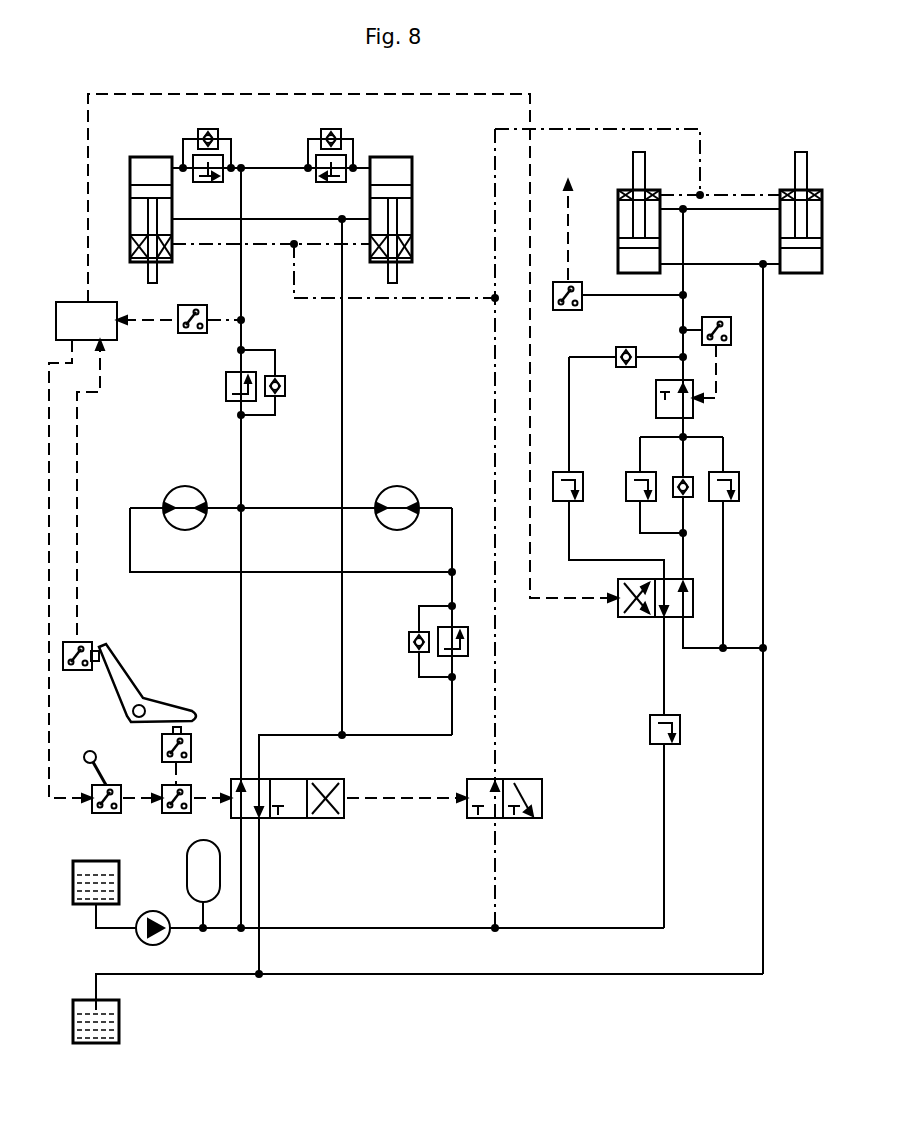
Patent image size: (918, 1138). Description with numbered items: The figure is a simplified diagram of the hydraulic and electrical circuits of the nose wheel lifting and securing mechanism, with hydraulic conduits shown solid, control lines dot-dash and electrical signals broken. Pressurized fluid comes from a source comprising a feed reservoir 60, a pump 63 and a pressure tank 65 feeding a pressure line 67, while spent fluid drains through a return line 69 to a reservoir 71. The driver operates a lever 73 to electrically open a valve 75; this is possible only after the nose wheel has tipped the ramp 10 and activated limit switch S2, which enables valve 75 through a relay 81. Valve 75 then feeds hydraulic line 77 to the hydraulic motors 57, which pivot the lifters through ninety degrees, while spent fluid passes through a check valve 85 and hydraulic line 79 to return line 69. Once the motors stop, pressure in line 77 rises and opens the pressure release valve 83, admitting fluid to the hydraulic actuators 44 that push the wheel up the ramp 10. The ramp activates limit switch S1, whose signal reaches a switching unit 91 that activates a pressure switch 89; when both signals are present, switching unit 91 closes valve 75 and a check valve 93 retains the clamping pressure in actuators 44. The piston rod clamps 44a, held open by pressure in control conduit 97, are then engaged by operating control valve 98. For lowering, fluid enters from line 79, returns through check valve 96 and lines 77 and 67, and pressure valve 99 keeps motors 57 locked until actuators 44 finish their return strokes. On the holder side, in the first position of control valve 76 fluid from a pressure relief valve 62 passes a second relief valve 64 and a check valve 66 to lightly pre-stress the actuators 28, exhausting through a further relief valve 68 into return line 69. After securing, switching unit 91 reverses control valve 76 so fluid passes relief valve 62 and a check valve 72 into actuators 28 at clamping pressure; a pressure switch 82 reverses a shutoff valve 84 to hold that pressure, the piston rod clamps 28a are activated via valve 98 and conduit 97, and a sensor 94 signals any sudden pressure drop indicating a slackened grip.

The ramp 10 is at (164, 712).
The hydraulic actuator 28 is at (620, 262).
The piston rod clamp 28a is at (628, 188).
The hydraulic actuator 44 is at (130, 165).
The piston rod clamp 44a is at (133, 246).
The hydraulic motor 57 is at (190, 468).
The tank 60 is at (73, 877).
The pressure relief valve 62 is at (680, 727).
The pump 63 is at (165, 938).
The second relief valve 64 is at (564, 472).
The pressure tank 65 is at (187, 872).
The check valve 66 is at (621, 347).
The pressure line 67 is at (370, 928).
The relief valve 68 is at (632, 501).
The return line 69 is at (377, 974).
The tank 71 is at (119, 1021).
The check valve 72 is at (688, 497).
The lever 73 is at (105, 772).
The valve 75 is at (297, 818).
The control valve 76 is at (652, 617).
The hydraulic line 77 is at (243, 645).
The hydraulic line 79 is at (342, 385).
The relay 81 is at (168, 813).
The pressure switch 82 is at (716, 317).
The pressure release valve 83 is at (227, 387).
The shutoff valve 84 is at (656, 408).
The check valve 85 is at (408, 645).
The pressure switch 89 is at (190, 334).
The switching unit 91 is at (88, 302).
The check valve 93 is at (213, 182).
The sensor 94 is at (572, 312).
The check valve 96 is at (285, 386).
The hydraulic control conduit 97 is at (493, 385).
The control valve 98 is at (520, 818).
The pressure valve 99 is at (457, 658).
The limit switch S1 is at (84, 642).
The limit switch S2 is at (191, 745).